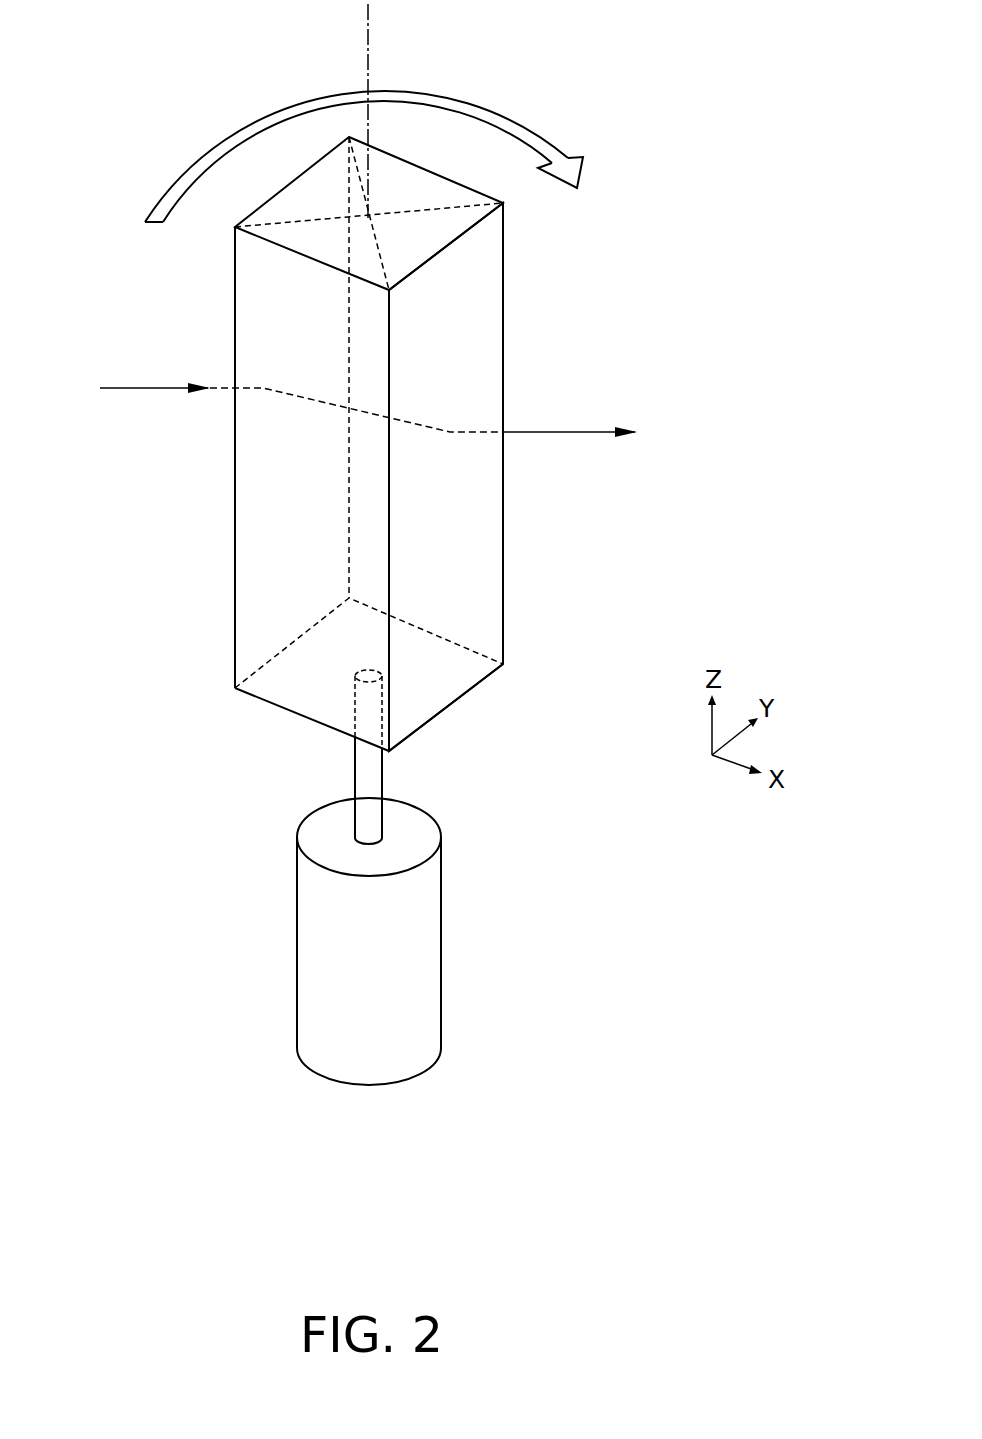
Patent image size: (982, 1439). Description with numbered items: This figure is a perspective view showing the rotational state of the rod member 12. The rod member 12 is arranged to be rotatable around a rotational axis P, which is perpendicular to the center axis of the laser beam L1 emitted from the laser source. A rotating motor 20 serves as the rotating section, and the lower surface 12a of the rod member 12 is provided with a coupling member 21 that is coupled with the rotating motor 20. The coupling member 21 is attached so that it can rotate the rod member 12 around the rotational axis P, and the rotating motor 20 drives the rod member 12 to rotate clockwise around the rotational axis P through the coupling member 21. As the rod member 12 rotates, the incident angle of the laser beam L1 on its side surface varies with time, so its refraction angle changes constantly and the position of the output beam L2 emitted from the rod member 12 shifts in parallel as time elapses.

The rod member 12 is at (477, 290).
The lower surface 12a is at (445, 683).
The rotating motor 20 is at (320, 970).
The coupling member 21 is at (362, 770).
The rotational axis P is at (370, 15).
The laser beam L1 is at (132, 388).
The output beam L2 is at (590, 432).